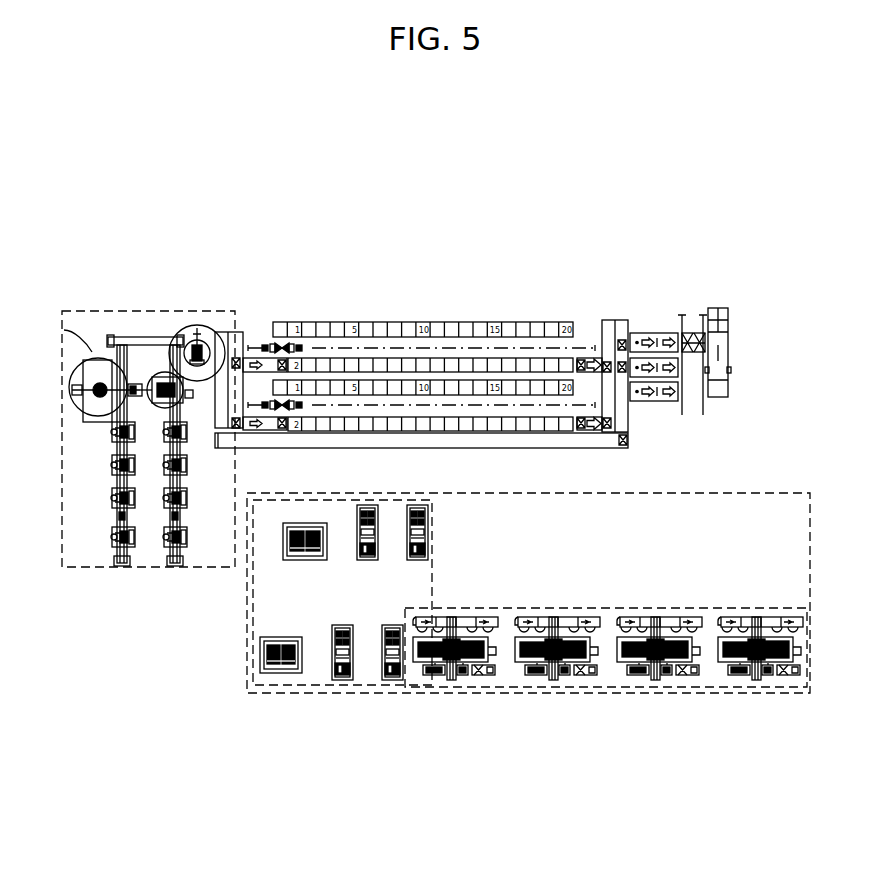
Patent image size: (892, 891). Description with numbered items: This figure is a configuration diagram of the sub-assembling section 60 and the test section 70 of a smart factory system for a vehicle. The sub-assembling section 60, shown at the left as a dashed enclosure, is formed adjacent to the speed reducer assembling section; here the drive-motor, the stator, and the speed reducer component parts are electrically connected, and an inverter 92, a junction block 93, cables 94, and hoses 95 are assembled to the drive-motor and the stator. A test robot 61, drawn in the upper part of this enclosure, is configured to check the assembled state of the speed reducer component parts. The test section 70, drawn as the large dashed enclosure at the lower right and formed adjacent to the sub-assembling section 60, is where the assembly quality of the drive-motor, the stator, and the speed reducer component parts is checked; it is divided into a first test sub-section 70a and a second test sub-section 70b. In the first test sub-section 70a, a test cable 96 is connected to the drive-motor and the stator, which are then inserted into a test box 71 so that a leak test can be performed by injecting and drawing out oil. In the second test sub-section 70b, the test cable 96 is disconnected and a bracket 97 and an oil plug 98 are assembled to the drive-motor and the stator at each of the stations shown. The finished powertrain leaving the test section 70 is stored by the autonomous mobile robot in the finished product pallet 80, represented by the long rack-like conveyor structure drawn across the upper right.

The sub-assembling section 60 is at (140, 311).
The test robot 61 is at (197, 337).
The finished product pallet 80 is at (522, 322).
The inverter 92 is at (203, 465).
The junction block 93 is at (203, 500).
The cables 94 is at (200, 535).
The hoses 95 is at (130, 550).
The test cable 96 is at (300, 560).
The test box 71 is at (388, 625).
The test section 70 is at (690, 693).
The first test sub-section 70a is at (370, 693).
The second test sub-section 70b is at (490, 687).
The bracket 97 is at (730, 722).
The oil plug 98 is at (776, 640).